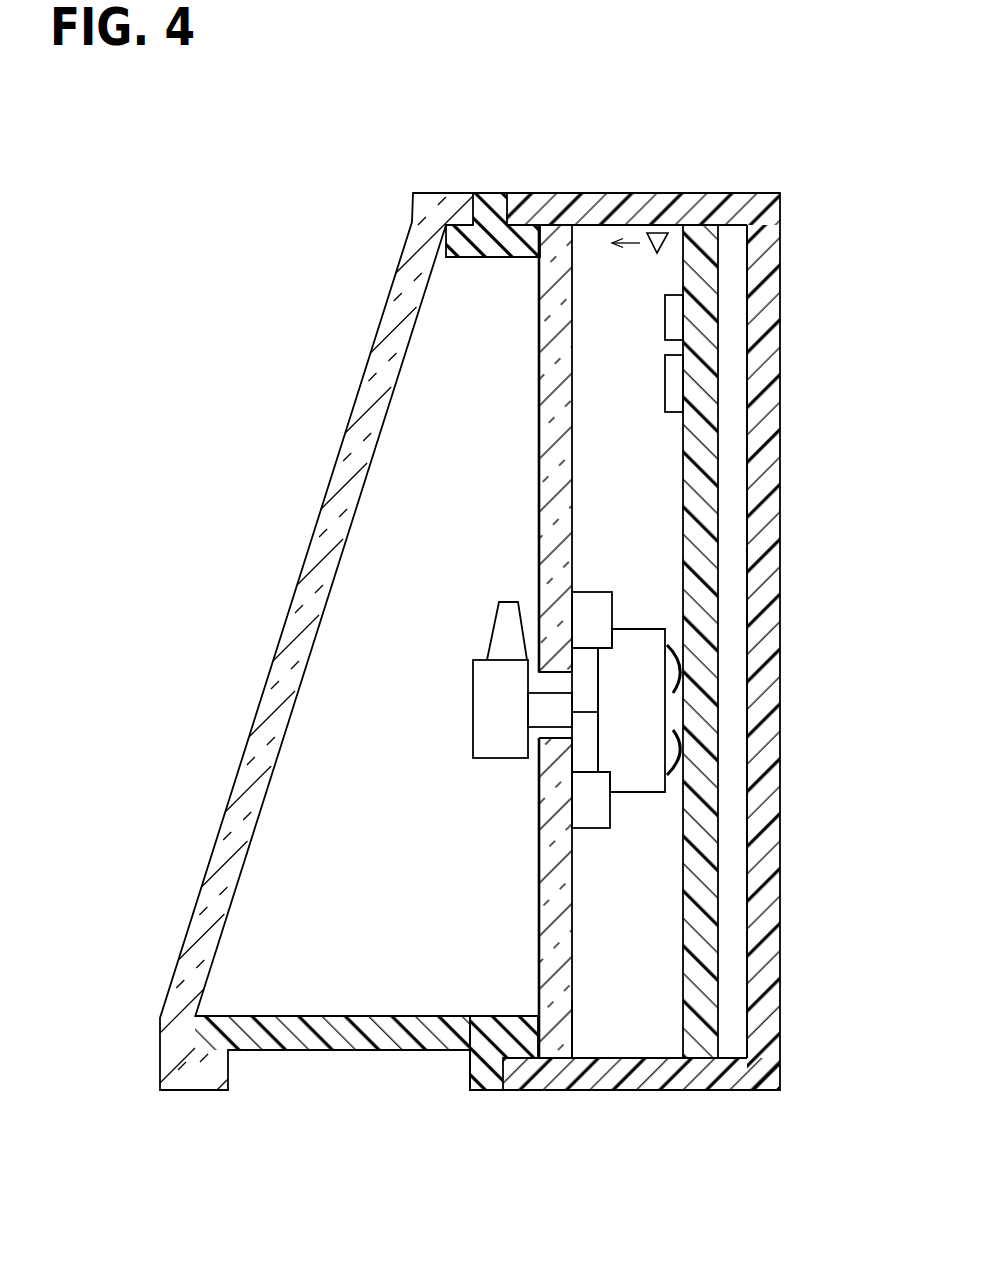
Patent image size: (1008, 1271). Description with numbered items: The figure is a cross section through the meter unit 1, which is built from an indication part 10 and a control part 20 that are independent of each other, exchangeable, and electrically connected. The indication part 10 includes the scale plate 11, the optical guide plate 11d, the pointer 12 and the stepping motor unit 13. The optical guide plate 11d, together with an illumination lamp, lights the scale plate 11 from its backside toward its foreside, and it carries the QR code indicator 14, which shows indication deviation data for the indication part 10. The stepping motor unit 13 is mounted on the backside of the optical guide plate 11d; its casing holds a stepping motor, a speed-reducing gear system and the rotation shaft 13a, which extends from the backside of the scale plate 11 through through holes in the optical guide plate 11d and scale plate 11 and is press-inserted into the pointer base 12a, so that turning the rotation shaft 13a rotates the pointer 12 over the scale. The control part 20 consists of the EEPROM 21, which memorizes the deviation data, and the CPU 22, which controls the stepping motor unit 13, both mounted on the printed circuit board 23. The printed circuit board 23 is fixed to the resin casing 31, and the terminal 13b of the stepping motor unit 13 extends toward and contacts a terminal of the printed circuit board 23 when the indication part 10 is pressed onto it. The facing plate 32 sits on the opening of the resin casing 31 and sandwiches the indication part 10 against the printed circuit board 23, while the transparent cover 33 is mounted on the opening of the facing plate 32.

The meter unit 1 is at (797, 187).
The indication part 10 is at (508, 923).
The scale plate 11 is at (539, 965).
The optical guide plate 11d is at (576, 1010).
The pointer 12 is at (493, 618).
The pointer base 12a is at (472, 705).
The stepping motor unit 13 is at (642, 622).
The rotation shaft 13a is at (574, 708).
The terminal 13b is at (683, 648).
The QR code indicator 14 is at (578, 254).
The control part 20 is at (668, 982).
The EEPROM 21 is at (667, 388).
The CPU 22 is at (667, 318).
The printed circuit board 23 is at (712, 507).
The resin casing 31 is at (605, 1077).
The facing plate 32 is at (267, 1050).
The cover 33 is at (195, 903).